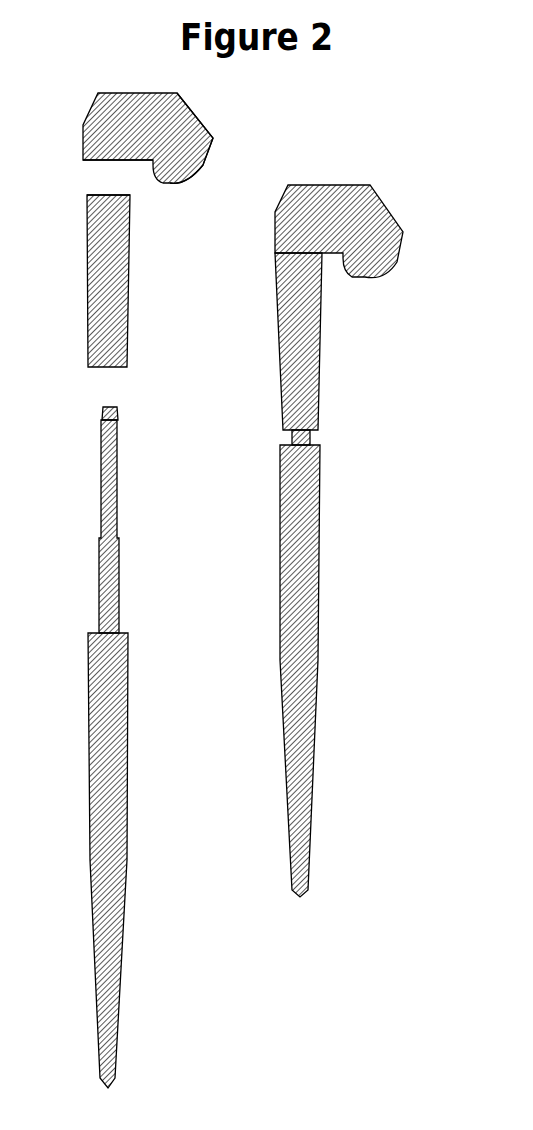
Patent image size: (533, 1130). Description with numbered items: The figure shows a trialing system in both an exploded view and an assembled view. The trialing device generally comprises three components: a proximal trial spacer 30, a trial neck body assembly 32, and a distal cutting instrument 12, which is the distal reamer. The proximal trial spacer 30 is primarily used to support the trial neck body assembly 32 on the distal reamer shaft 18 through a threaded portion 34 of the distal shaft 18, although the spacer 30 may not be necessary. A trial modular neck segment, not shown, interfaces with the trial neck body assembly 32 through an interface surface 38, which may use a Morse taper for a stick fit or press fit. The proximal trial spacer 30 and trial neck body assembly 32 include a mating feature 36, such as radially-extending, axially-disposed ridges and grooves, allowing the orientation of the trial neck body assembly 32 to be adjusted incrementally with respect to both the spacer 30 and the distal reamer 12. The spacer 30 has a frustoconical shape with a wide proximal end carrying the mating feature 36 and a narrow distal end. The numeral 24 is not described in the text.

The distal cutting instrument 12 is at (73, 757).
The distal reamer shaft 18 is at (129, 492).
The taper junction 24 is at (107, 163).
The proximal trial spacer 30 is at (148, 282).
The trial neck body assembly 32 is at (118, 76).
The threaded portion 34 is at (122, 415).
The mating feature 36 is at (118, 197).
The interface surface 38 is at (213, 127).